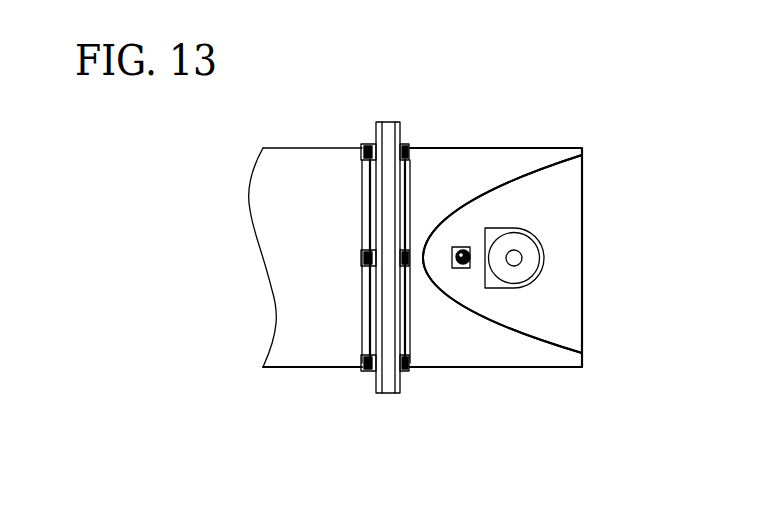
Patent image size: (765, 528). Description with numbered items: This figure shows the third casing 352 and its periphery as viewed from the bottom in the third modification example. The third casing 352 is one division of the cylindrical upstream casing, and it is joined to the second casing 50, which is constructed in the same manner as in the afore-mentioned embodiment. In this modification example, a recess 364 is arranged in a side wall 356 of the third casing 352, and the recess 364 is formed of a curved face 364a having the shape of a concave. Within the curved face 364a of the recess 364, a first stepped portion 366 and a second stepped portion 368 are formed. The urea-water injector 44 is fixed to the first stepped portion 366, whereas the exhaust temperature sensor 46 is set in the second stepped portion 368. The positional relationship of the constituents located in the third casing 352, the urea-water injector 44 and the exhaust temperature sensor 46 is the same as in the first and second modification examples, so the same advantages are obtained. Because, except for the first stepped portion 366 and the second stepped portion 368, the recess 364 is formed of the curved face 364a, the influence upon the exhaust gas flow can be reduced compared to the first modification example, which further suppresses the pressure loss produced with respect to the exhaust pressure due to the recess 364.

The second casing 50 is at (313, 160).
The side wall 356 is at (426, 160).
The exhaust temperature sensor 46 is at (466, 253).
The curved face 364a is at (558, 188).
The urea-water injector 44 is at (527, 252).
The first stepped portion 366 is at (498, 290).
The third casing 352 is at (582, 311).
The recess 364 is at (558, 320).
The second stepped portion 368 is at (455, 269).